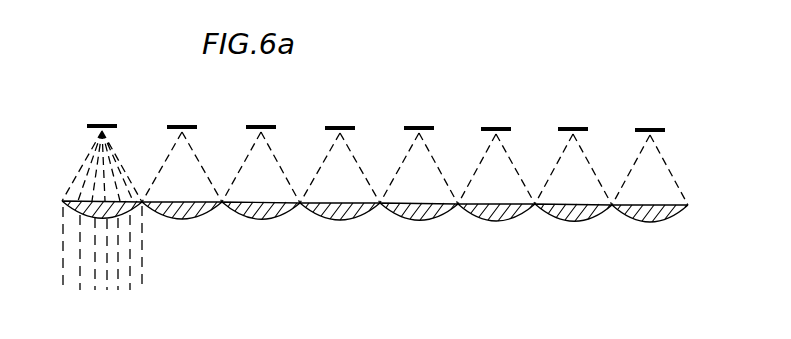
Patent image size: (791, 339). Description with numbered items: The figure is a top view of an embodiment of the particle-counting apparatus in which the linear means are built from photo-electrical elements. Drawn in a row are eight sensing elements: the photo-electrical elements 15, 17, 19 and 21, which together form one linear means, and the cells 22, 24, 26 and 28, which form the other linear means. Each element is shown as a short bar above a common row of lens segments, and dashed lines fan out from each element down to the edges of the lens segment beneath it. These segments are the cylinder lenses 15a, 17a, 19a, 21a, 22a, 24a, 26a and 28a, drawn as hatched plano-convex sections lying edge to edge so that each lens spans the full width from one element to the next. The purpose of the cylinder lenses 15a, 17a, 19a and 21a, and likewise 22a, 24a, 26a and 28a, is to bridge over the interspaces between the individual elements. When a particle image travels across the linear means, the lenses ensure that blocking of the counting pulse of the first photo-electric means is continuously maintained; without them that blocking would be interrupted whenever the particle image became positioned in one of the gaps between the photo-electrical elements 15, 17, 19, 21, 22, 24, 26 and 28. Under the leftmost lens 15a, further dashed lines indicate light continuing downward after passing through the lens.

The photo-electrical element 15 is at (102, 195).
The cylinder lens 15a is at (62, 204).
The photo-electrical element 17 is at (182, 151).
The cylinder lens 17a is at (187, 219).
The photo-electrical element 19 is at (261, 151).
The cylinder lens 19a is at (282, 214).
The photo-electrical element 21 is at (340, 151).
The cylinder lens 21a is at (357, 217).
The cell 22 is at (419, 152).
The cylinder lens 22a is at (438, 216).
The cell 24 is at (496, 152).
The cylinder lens 24a is at (512, 218).
The cell 26 is at (573, 152).
The cylinder lens 26a is at (590, 218).
The cell 28 is at (650, 152).
The cylinder lens 28a is at (668, 218).